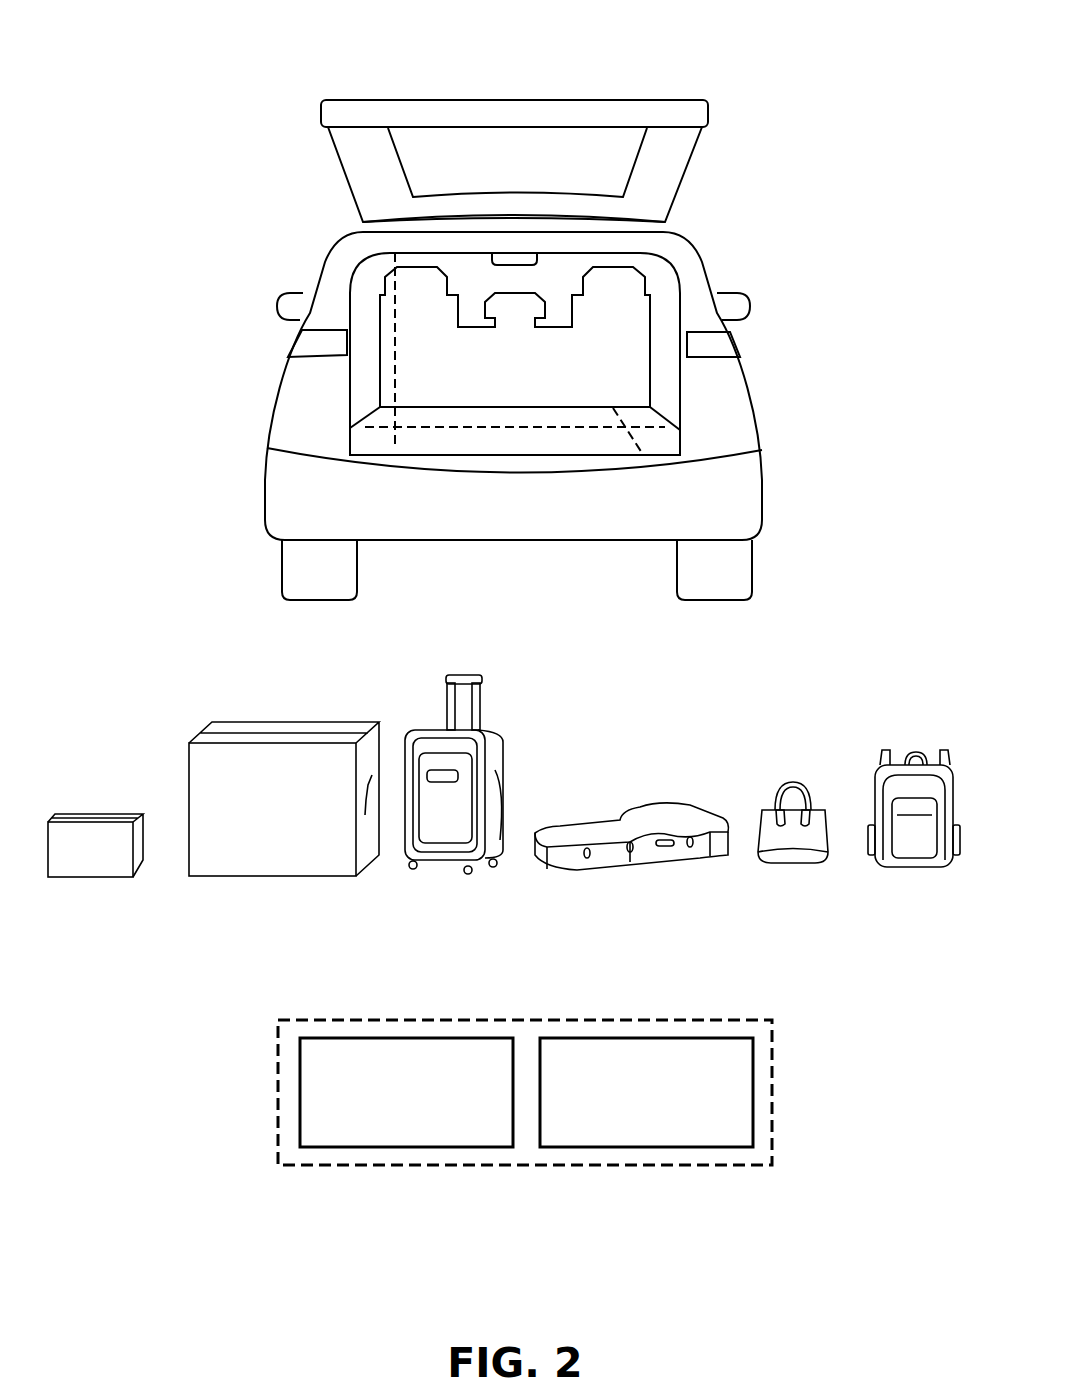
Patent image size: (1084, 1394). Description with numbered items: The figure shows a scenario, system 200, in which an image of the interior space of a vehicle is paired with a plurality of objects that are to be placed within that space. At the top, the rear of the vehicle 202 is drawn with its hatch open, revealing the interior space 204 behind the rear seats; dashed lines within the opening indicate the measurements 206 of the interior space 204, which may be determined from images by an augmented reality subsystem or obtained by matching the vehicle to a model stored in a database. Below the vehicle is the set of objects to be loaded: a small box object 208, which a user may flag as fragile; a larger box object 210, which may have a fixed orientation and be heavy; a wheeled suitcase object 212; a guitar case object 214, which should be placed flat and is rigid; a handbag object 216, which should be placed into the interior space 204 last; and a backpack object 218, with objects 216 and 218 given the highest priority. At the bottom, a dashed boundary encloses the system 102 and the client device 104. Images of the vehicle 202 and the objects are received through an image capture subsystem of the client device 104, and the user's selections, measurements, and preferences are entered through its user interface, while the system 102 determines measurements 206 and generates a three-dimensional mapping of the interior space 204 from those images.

The system 200 is at (543, 70).
The vehicle 202 is at (756, 377).
The interior space 204 is at (686, 443).
The measurements 206 is at (396, 362).
The object 208 is at (95, 863).
The object 210 is at (284, 817).
The object 212 is at (454, 794).
The object 214 is at (631, 858).
The object 216 is at (793, 847).
The object 218 is at (914, 831).
The system 102 is at (432, 1106).
The client device 104 is at (624, 1121).